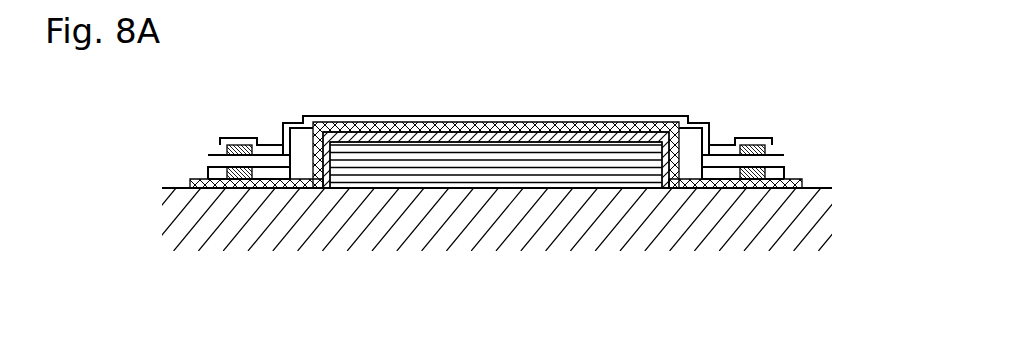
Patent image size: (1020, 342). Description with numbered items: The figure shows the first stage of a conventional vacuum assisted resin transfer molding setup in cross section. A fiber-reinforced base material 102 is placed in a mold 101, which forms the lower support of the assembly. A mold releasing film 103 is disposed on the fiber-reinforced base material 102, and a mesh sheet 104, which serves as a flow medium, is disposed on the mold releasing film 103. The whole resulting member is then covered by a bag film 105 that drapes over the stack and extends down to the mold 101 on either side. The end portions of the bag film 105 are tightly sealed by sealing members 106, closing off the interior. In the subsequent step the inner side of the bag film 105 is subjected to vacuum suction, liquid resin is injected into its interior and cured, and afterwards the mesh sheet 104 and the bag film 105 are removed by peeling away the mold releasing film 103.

The mold 101 is at (680, 222).
The fiber-reinforced base material 102 is at (489, 173).
The mold releasing film 103 is at (381, 142).
The mesh sheet 104 is at (452, 127).
The bag film 105 is at (525, 117).
The sealing members 106 is at (235, 144).